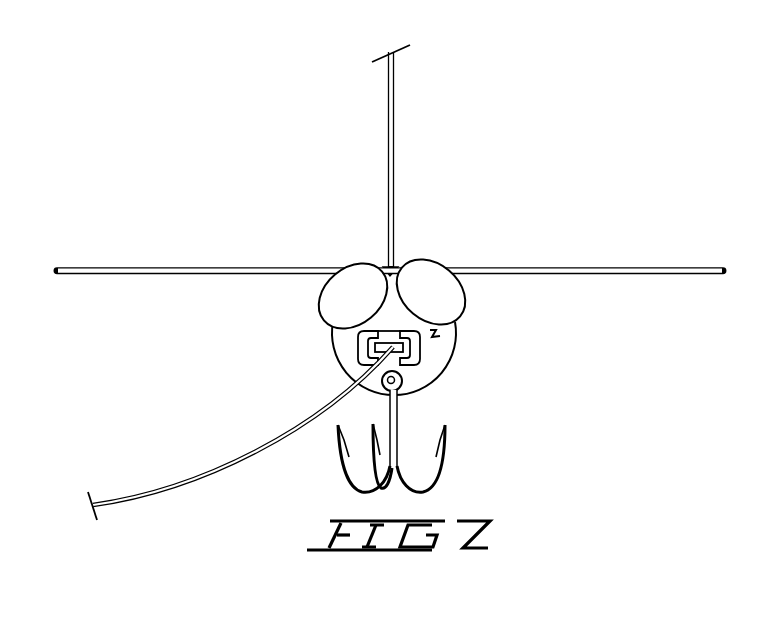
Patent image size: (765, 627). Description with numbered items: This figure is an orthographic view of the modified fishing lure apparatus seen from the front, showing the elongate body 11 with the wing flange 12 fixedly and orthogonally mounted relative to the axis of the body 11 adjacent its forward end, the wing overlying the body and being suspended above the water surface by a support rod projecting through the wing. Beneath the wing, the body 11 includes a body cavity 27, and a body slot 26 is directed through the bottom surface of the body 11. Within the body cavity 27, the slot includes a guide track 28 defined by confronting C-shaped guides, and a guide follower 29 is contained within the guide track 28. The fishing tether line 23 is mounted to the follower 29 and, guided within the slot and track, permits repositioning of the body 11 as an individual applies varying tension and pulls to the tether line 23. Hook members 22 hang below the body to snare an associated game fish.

The elongate body 11 is at (450, 345).
The wing flange 12 is at (610, 270).
The hook members 22 is at (397, 422).
The fishing tether line 23 is at (229, 474).
The body slot 26 is at (402, 388).
The body cavity 27 is at (436, 336).
The guide track 28 is at (393, 331).
The guide follower 29 is at (372, 347).